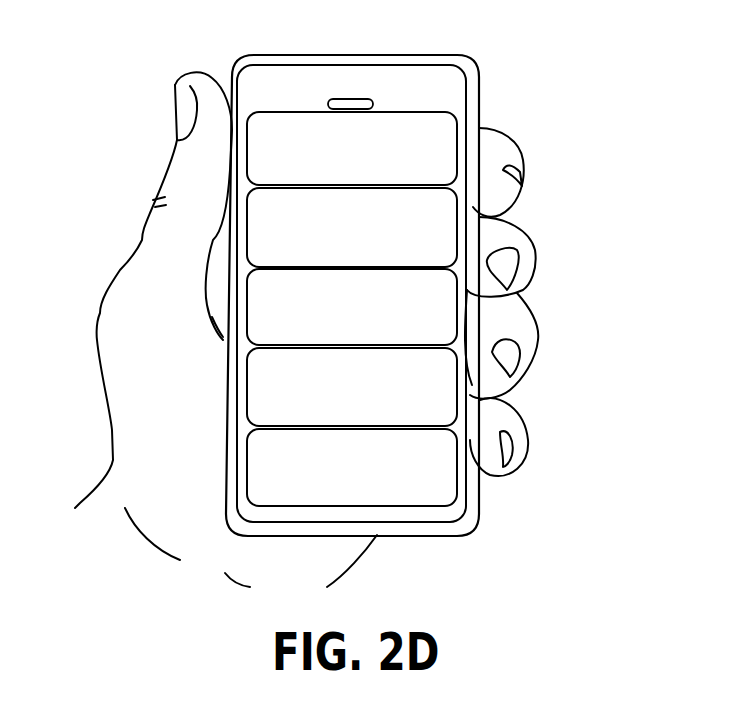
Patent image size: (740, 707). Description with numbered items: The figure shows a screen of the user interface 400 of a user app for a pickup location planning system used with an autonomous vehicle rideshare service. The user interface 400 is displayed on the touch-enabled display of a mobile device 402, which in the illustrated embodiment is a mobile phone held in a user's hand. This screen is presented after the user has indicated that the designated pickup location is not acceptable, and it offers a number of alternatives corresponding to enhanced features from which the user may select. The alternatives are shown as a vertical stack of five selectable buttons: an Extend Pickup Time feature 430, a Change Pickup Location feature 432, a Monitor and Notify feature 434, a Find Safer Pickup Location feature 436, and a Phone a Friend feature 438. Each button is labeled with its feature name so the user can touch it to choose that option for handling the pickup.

The user interface 400 is at (382, 270).
The mobile device 402 is at (302, 270).
The Extend Pickup Time feature 430 is at (453, 155).
The Change Pickup Location feature 432 is at (453, 223).
The Monitor and Notify feature 434 is at (458, 315).
The Find Safer Pickup Location feature 436 is at (458, 392).
The Phone a Friend feature 438 is at (458, 480).